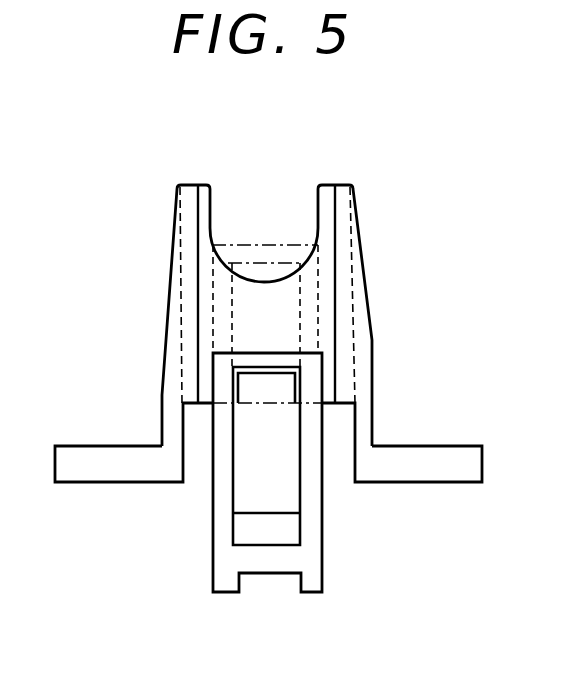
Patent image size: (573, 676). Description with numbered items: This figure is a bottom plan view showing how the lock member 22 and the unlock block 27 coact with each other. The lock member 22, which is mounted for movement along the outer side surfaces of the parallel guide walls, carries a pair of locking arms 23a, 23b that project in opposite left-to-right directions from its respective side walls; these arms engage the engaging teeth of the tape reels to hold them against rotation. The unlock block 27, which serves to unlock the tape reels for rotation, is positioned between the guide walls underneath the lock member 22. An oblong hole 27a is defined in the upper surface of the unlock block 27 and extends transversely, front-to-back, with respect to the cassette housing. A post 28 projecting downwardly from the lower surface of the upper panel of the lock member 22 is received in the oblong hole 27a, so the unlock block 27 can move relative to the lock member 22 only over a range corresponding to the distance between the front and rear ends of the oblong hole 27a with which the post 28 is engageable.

The lock member 22 is at (360, 247).
The locking arm 23a is at (445, 455).
The locking arm 23b is at (88, 455).
The unlock block 27 is at (325, 548).
The oblong hole 27a is at (233, 455).
The post 28 is at (257, 387).